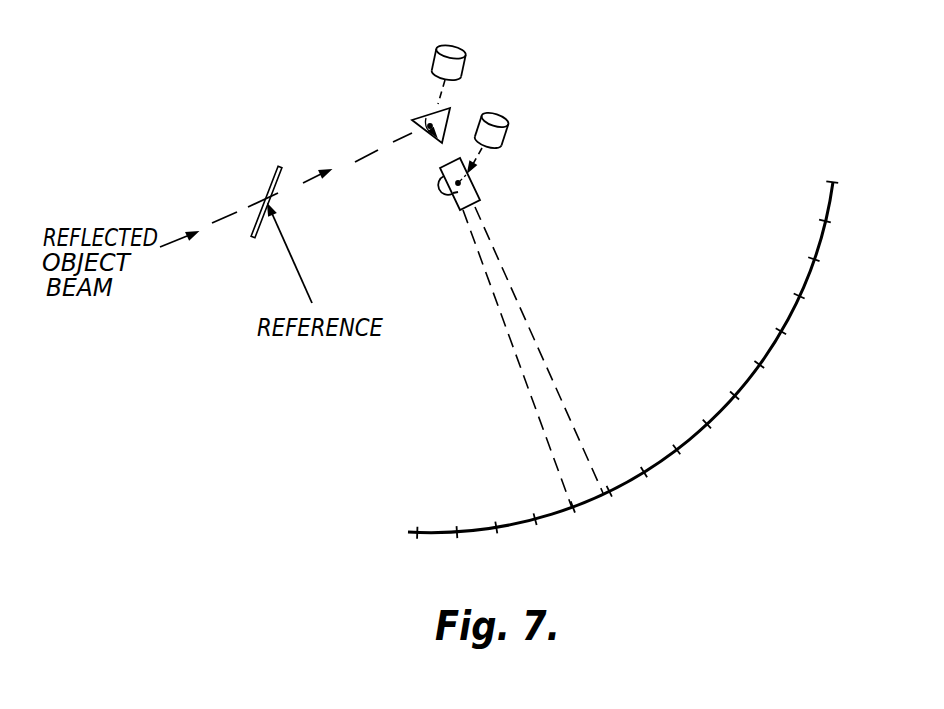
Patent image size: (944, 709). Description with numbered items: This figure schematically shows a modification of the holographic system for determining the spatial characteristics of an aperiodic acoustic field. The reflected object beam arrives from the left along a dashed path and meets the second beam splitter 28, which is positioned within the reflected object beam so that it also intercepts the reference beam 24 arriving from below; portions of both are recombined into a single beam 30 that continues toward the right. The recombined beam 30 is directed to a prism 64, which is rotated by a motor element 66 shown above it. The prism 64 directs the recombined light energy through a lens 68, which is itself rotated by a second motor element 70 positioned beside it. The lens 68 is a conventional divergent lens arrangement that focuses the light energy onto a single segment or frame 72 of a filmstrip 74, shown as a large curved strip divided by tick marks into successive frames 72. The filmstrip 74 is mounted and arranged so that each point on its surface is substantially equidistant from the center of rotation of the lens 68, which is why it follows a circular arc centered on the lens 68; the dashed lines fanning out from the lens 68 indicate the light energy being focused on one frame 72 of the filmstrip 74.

The reference beam 24 is at (310, 286).
The second beam splitter 28 is at (276, 168).
The beam 30 is at (377, 151).
The prism 64 is at (452, 107).
The motor element 66 is at (452, 52).
The lens 68 is at (481, 186).
The second motor element 70 is at (508, 135).
The frame 72 is at (721, 415).
The filmstrip 74 is at (798, 272).